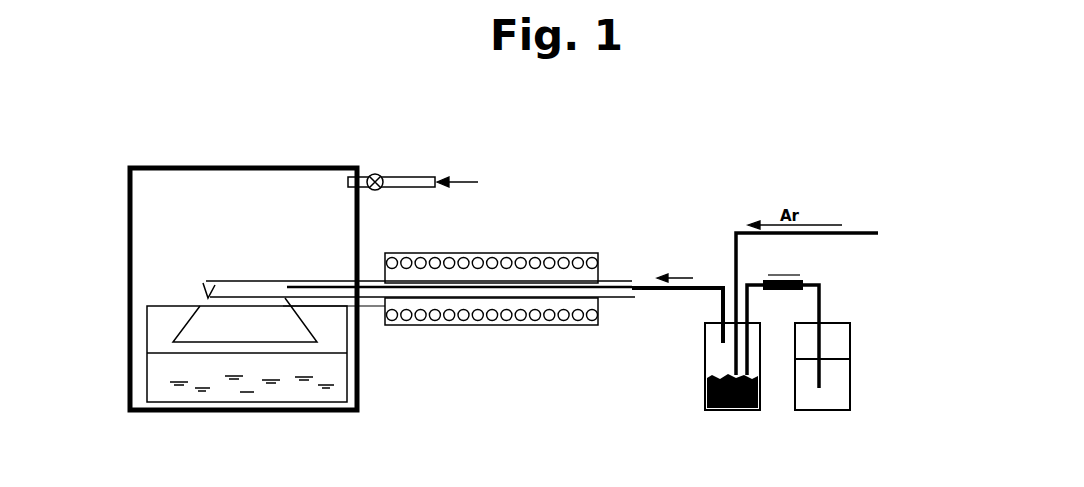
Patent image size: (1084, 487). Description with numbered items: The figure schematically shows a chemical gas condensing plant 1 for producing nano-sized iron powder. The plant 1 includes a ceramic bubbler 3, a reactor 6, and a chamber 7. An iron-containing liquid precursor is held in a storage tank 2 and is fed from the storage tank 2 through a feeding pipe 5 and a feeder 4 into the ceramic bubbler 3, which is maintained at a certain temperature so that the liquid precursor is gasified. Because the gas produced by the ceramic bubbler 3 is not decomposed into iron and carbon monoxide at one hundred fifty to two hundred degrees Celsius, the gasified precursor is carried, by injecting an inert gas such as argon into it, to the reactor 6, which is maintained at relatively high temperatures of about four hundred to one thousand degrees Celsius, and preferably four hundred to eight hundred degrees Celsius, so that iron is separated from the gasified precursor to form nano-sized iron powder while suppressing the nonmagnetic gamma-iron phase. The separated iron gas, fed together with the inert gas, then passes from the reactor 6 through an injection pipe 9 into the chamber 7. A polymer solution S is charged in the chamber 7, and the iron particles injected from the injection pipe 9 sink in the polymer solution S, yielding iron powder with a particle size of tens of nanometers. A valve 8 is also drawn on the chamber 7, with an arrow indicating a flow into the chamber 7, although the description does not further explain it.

The chemical gas condensing plant 1 is at (812, 192).
The storage tank 2 is at (850, 362).
The ceramic bubbler 3 is at (705, 357).
The feeder 4 is at (805, 280).
The feeding pipe 5 is at (820, 305).
The reactor 6 is at (530, 253).
The chamber 7 is at (158, 213).
The valve 8 is at (405, 177).
The injection pipe 9 is at (203, 283).
The polymer solution S is at (157, 383).